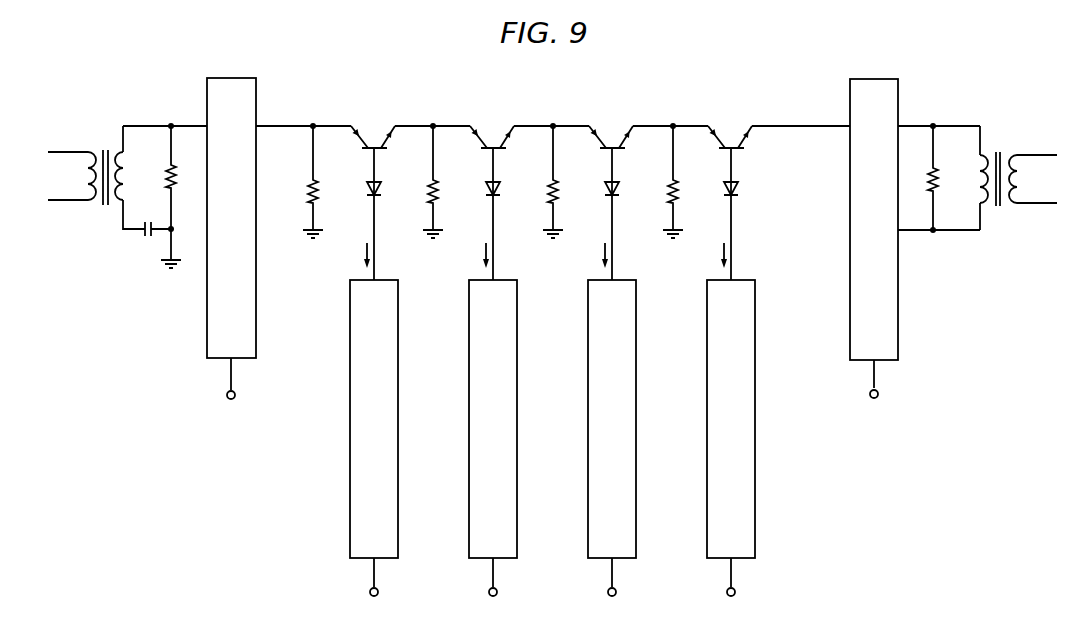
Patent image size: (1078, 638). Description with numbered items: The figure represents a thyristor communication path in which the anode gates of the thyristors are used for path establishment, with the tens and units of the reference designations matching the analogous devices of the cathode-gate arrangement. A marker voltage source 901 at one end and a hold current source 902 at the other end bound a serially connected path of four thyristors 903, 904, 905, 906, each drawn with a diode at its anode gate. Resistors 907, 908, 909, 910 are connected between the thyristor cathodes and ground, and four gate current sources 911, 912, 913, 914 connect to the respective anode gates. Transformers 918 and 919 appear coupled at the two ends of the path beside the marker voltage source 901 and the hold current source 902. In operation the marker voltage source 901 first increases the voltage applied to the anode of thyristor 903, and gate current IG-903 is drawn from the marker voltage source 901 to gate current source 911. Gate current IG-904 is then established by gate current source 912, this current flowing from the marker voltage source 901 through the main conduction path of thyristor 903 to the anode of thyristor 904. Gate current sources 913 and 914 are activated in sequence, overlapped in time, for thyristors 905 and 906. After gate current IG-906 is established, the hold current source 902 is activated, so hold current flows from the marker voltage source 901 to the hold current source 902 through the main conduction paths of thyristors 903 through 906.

The marker voltage source 901 is at (224, 78).
The hold current source 902 is at (874, 79).
The thyristor 903 is at (373, 124).
The thyristor 904 is at (492, 124).
The thyristor 905 is at (611, 124).
The thyristor 906 is at (730, 124).
The resistor 907 is at (319, 191).
The resistor 908 is at (439, 191).
The resistor 909 is at (559, 191).
The resistor 910 is at (679, 191).
The gate current source 911 is at (350, 420).
The gate current source 912 is at (469, 420).
The gate current source 913 is at (588, 420).
The gate current source 914 is at (707, 420).
The input transformer 918 is at (106, 145).
The output transformer 919 is at (998, 150).